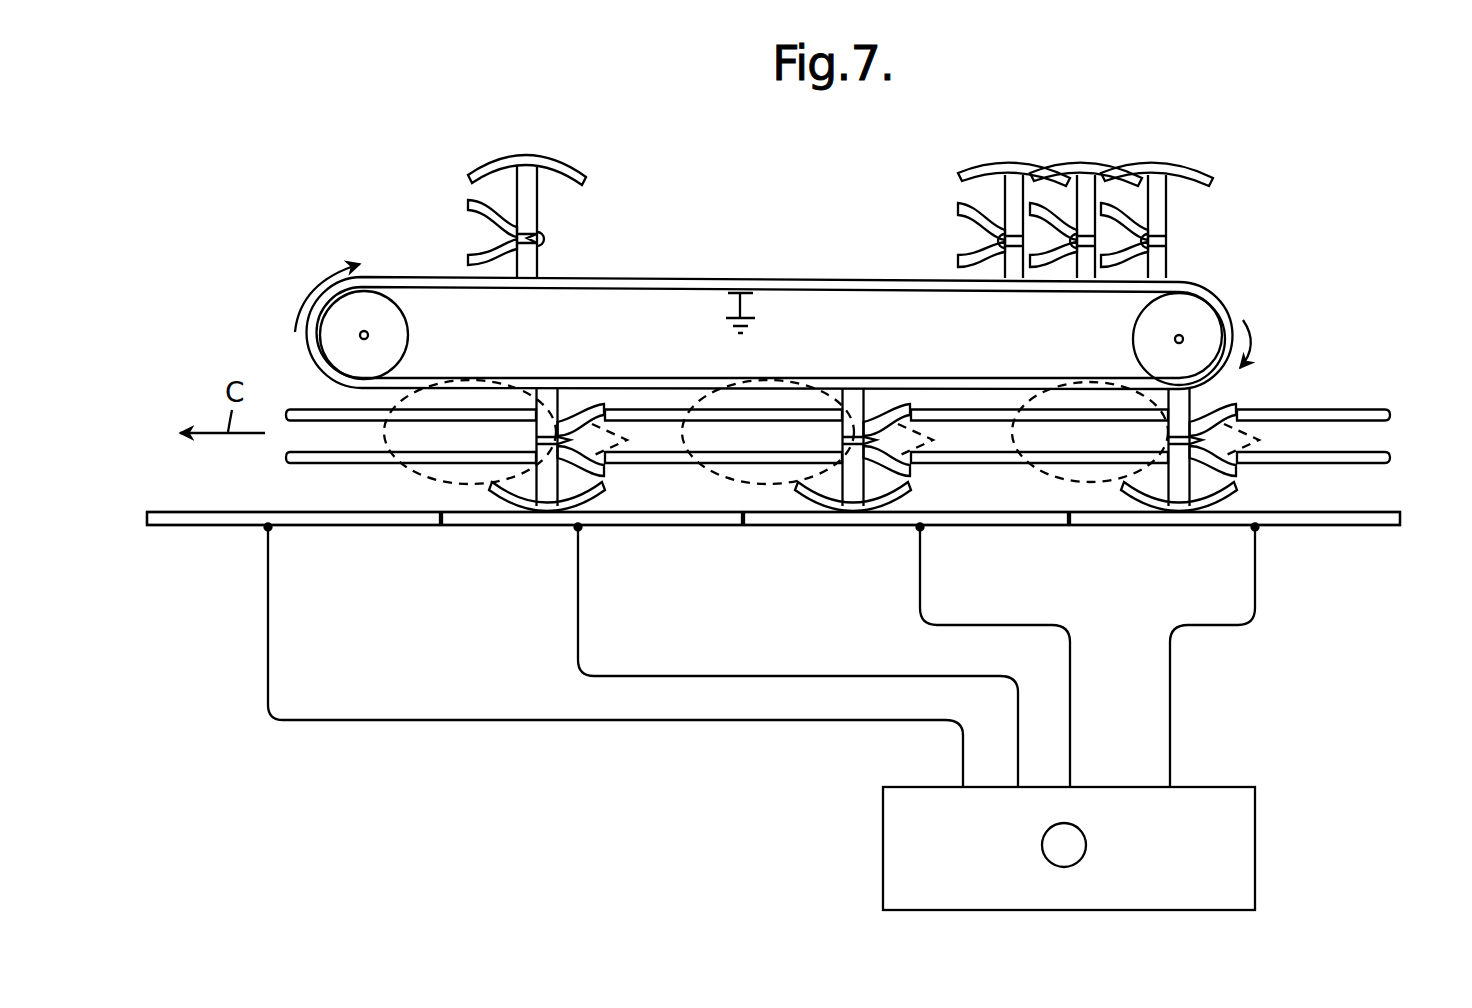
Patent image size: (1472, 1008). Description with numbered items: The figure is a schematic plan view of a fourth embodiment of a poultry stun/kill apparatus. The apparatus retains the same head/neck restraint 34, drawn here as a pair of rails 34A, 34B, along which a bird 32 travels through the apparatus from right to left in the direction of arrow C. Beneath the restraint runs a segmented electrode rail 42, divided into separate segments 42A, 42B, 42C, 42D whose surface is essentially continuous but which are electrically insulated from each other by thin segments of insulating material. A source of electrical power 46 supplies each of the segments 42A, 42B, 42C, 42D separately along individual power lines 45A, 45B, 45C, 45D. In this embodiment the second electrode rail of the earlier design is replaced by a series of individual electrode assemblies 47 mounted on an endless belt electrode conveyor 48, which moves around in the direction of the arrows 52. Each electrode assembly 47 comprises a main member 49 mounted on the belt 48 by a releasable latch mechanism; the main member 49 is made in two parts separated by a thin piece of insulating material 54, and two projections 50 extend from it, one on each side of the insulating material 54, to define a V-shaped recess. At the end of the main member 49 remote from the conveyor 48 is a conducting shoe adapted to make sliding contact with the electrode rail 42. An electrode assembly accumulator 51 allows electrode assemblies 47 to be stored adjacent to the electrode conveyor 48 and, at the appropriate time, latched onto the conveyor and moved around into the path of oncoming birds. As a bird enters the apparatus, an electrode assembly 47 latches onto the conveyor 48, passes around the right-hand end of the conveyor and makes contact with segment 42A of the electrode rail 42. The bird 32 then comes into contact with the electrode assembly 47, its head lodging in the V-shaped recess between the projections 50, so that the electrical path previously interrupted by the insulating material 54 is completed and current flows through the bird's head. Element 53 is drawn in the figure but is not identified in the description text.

The bird 32 is at (405, 484).
The head/neck restraint 34 is at (876, 433).
The head/neck restraint rail 34A is at (1342, 411).
The head/neck restraint rail 34B is at (1322, 463).
The electrode rail 42 is at (796, 550).
The electrode rail segment 42A is at (1305, 517).
The electrode rail segment 42B is at (1000, 517).
The electrode rail segment 42C is at (698, 517).
The electrode rail segment 42D is at (330, 517).
The power line 45A is at (1170, 714).
The power line 45B is at (1070, 689).
The power line 45C is at (805, 676).
The power line 45D is at (406, 720).
The source of electrical power 46 is at (1255, 858).
The electrode assembly 47 is at (839, 306).
The endless belt electrode conveyor 48 is at (1222, 300).
The main member 49 is at (574, 221).
The projections 50 is at (446, 232).
The electrode assembly accumulator 51 is at (1207, 215).
The arrows 52 is at (312, 297).
The deflector shield 53 is at (527, 145).
The insulating material 54 is at (570, 243).